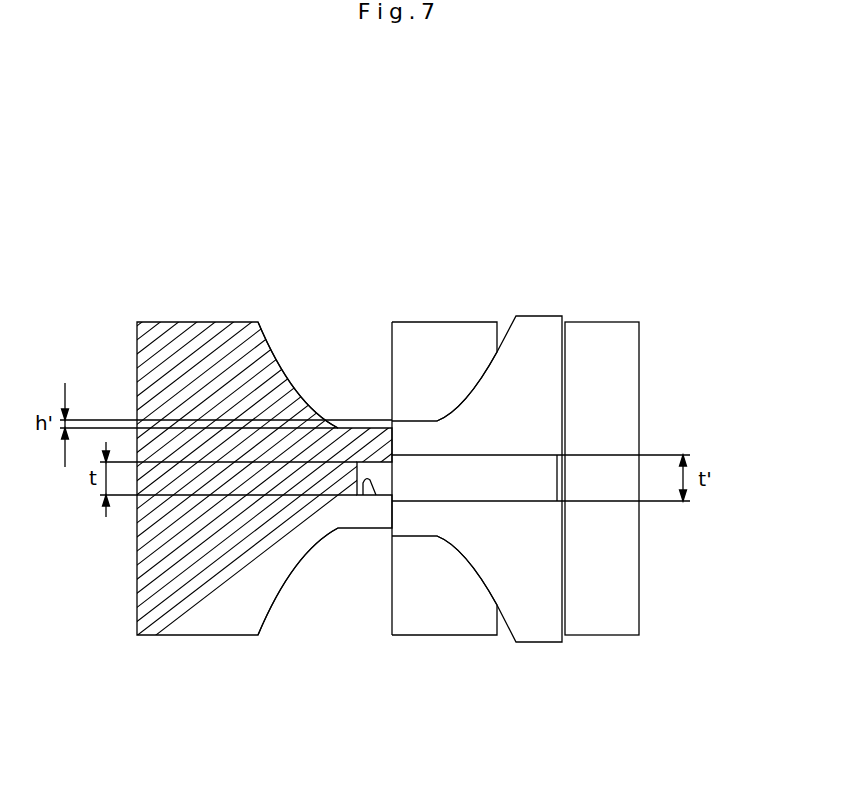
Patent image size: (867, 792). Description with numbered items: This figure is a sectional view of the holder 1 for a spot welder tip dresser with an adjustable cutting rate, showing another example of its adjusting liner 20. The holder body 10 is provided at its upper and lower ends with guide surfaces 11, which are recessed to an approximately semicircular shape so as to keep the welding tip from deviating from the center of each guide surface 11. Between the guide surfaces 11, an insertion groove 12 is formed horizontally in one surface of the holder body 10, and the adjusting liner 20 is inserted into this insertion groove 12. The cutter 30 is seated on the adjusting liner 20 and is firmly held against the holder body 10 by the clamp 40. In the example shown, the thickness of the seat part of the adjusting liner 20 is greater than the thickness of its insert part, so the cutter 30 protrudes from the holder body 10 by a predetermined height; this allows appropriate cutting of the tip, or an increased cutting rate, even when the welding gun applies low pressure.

The holder 1 is at (262, 152).
The holder body 10 is at (175, 325).
The guide surface 11 is at (281, 365).
The insertion groove 12 is at (362, 483).
The adjusting liner 20 is at (431, 483).
The cutter 30 is at (543, 332).
The clamp 40 is at (641, 343).